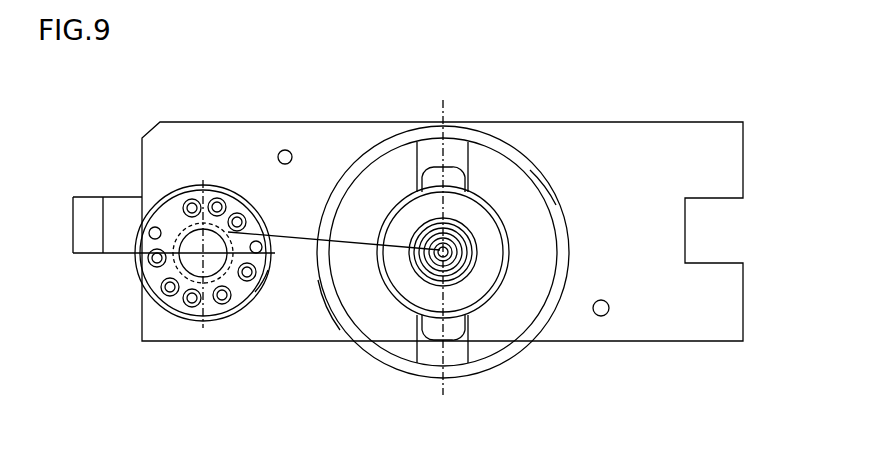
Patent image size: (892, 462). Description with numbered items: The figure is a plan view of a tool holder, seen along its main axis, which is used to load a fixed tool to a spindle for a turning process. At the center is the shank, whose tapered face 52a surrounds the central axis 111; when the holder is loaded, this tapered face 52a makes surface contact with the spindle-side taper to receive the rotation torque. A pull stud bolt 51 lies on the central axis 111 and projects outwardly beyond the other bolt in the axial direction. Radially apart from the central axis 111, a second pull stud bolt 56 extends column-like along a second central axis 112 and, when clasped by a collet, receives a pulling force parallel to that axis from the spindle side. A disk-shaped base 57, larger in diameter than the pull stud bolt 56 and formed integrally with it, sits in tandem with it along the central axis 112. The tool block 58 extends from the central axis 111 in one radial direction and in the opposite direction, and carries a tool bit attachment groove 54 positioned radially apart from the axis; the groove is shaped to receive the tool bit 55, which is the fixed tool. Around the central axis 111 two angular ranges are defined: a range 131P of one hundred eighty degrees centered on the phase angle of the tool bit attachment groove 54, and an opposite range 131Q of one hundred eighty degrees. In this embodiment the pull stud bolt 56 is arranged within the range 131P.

The pull stud bolt 51 is at (428, 245).
The tapered face 52a is at (493, 270).
The tool bit attachment groove 54 is at (177, 185).
The tool bit 55 is at (117, 207).
The pull stud bolt 56 is at (241, 300).
The base 57 is at (257, 293).
The tool block 58 is at (300, 122).
The central axis 111 is at (467, 235).
The central axis 112 is at (143, 283).
The range 131P is at (316, 283).
The range 131Q is at (556, 205).